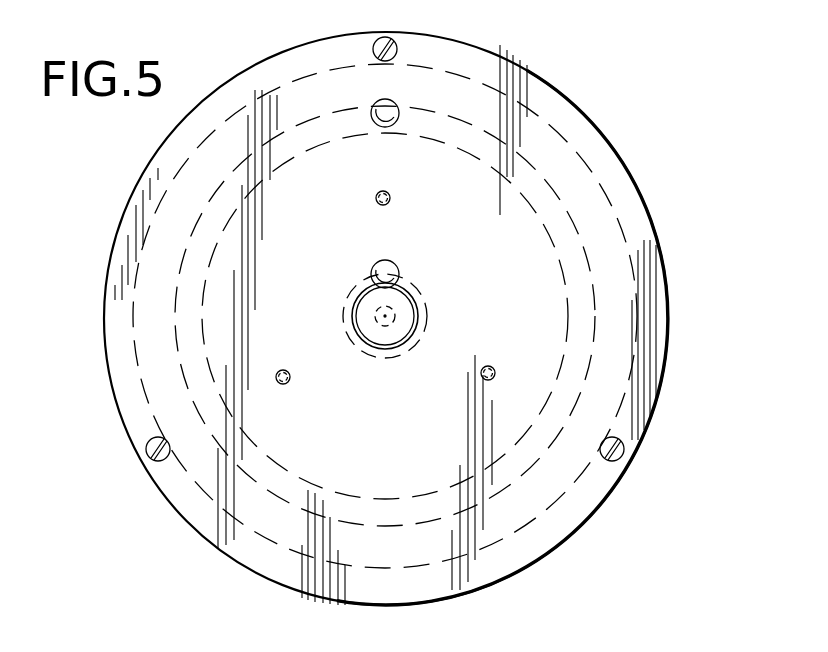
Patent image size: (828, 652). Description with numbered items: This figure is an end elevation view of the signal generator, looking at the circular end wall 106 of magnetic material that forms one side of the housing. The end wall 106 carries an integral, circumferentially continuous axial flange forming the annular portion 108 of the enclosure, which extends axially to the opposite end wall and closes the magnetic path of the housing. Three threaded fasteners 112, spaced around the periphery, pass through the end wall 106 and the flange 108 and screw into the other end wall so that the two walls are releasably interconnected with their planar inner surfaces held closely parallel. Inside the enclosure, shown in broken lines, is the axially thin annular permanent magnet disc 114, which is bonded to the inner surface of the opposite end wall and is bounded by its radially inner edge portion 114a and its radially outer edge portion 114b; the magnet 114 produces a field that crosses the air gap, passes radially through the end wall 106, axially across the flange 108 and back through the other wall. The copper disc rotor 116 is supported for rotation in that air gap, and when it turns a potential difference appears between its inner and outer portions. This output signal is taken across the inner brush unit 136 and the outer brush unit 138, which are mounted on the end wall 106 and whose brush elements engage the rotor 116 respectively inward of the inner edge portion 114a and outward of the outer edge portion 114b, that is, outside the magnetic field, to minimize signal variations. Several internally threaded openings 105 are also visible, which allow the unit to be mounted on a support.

The internally threaded openings 105 is at (391, 198).
The end wall 106 is at (638, 247).
The annular portion 108 is at (552, 88).
The threaded fasteners 112 is at (392, 42).
The permanent magnet disc 114 is at (555, 125).
The radially inner edge portion 114a is at (418, 290).
The radially outer edge portion 114b is at (535, 172).
The rotor 116 is at (587, 303).
The inner brush unit 136 is at (397, 266).
The outer brush unit 138 is at (398, 109).